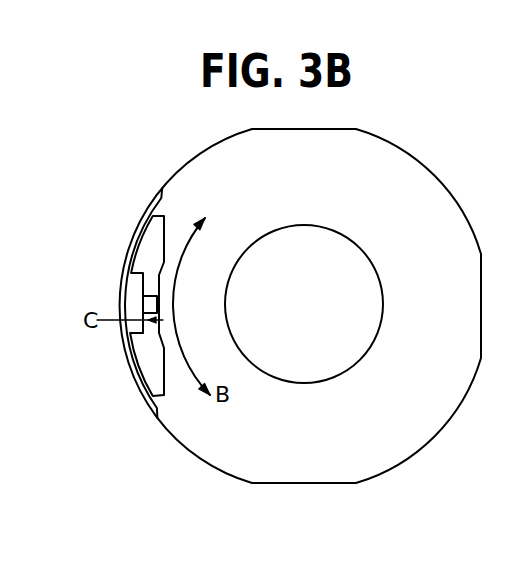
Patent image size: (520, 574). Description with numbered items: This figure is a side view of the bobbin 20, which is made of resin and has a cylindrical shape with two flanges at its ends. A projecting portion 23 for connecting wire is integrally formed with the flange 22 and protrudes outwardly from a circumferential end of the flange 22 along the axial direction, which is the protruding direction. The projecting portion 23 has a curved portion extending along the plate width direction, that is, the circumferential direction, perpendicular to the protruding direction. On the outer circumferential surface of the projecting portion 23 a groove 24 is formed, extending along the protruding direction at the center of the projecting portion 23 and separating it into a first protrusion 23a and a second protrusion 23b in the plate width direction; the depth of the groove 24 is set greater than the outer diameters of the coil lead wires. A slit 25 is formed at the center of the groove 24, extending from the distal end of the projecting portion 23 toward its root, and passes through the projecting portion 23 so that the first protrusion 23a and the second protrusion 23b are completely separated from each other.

The bobbin 20 is at (457, 165).
The flange 22 is at (178, 197).
The projecting portion 23 is at (110, 352).
The first protrusion 23a is at (148, 250).
The second protrusion 23b is at (150, 362).
The groove 24 is at (143, 297).
The slit 25 is at (142, 306).